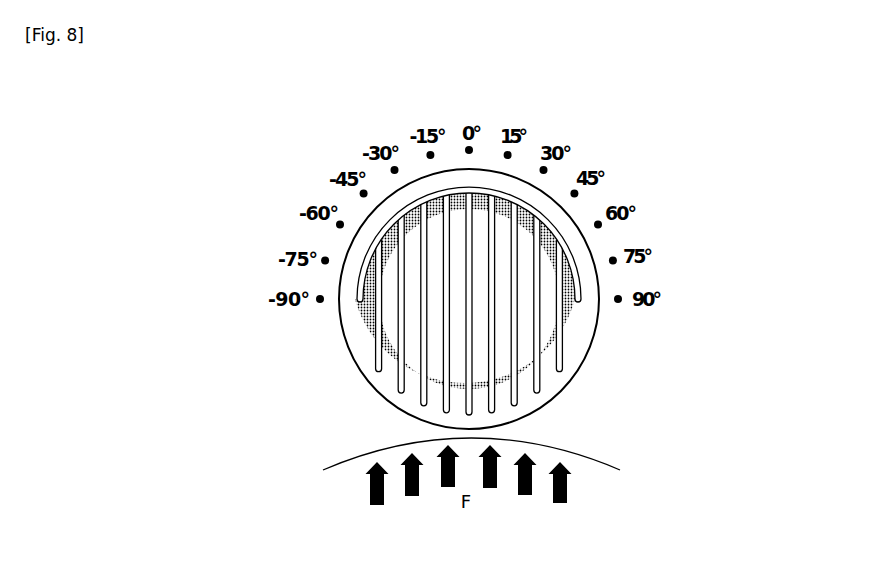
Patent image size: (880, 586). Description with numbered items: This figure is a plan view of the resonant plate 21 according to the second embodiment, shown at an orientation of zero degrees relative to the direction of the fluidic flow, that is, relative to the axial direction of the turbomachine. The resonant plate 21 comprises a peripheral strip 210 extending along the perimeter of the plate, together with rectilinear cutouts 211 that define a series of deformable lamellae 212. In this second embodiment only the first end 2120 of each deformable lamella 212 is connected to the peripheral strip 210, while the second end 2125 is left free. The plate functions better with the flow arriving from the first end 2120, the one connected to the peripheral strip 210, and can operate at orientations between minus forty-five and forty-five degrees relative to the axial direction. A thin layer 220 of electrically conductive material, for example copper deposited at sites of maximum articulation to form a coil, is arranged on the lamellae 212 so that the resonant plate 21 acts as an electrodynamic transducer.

The resonant plate 21 is at (492, 262).
The peripheral strip 210 is at (589, 354).
The rectilinear cutouts 211 is at (400, 342).
The deformable lamellae 212 is at (392, 310).
The thin layer of electrically conductive material 220 is at (455, 192).
The first end 2120 is at (430, 404).
The second end 2125 is at (543, 210).